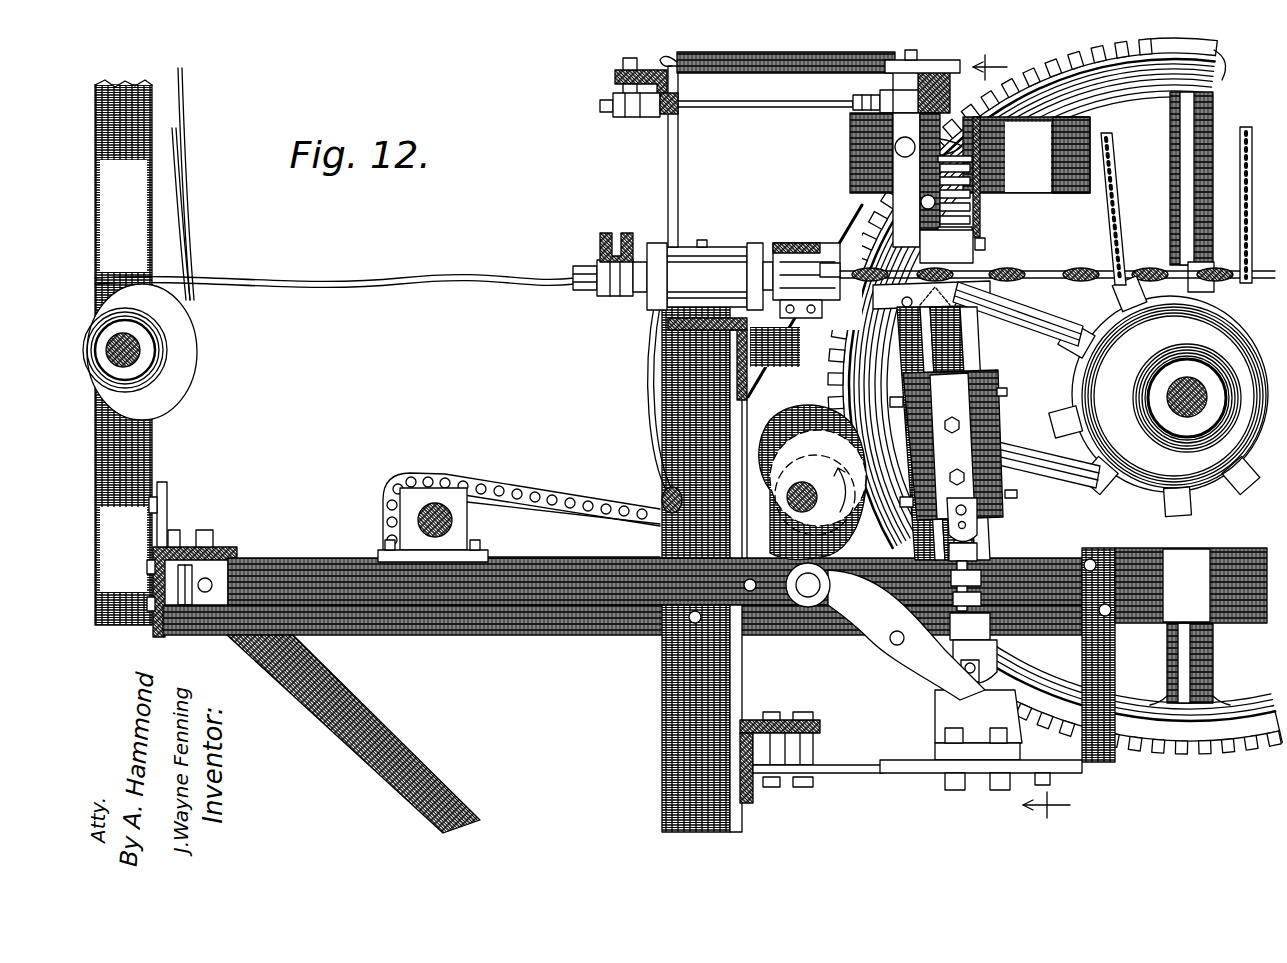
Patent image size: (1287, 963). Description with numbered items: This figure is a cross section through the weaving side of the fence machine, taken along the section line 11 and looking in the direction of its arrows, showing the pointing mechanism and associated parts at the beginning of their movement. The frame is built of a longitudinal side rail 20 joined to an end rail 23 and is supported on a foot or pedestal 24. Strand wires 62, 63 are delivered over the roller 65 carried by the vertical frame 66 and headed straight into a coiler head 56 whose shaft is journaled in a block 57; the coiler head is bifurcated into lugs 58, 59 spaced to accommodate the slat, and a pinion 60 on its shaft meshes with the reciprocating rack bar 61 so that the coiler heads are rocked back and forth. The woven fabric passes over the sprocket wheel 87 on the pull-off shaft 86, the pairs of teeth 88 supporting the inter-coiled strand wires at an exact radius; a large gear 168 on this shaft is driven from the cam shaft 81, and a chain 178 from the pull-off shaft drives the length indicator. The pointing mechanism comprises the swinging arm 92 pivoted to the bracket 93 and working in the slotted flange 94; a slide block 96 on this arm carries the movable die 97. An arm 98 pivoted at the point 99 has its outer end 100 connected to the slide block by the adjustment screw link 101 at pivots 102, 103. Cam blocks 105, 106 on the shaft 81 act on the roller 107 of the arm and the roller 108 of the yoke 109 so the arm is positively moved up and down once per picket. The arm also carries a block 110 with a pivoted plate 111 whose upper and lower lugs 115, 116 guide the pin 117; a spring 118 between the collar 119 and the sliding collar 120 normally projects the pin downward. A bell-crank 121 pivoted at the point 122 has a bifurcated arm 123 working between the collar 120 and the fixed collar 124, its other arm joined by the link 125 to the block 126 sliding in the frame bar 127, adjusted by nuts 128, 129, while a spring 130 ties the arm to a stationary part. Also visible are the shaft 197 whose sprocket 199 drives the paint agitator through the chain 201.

The section line 11 is at (1021, 437).
The longitudinal side rail 20 is at (238, 553).
The end rail 23 is at (576, 620).
The foot or pedestal 24 is at (664, 803).
The coiler head 56 is at (778, 250).
The block 57 is at (710, 275).
The finger or lug 58 is at (800, 246).
The finger or lug 59 is at (796, 320).
The pinion 60 is at (622, 290).
The reciprocating rack bar 61 is at (618, 238).
The strand wire 62 is at (184, 124).
The strand wire 63 is at (178, 166).
The roller 65 is at (197, 366).
The vertical frame 66 is at (123, 352).
The shaft 81 is at (788, 494).
The pull-off shaft 86 is at (1192, 412).
The sprocket wheel 87 is at (1110, 405).
The pairs of teeth 88 is at (1120, 300).
The swinging arm 92 is at (978, 552).
The bracket 93 is at (978, 725).
The flange 94 is at (1035, 155).
The slide block 96 is at (1000, 432).
The movable die 97 is at (972, 362).
The arm 98 is at (502, 600).
The pivot point 99 is at (208, 578).
The outer end of arm 100 is at (945, 680).
The adjustment screw link 101 is at (1000, 622).
The pivot point 102 is at (995, 641).
The pivot point 103 is at (980, 522).
The cam block 105 is at (846, 616).
The cam block 106 is at (746, 470).
The roller 107 is at (804, 608).
The roller 108 is at (806, 420).
The yoke 109 is at (662, 495).
The block 110 is at (981, 209).
The plate 111 is at (898, 186).
The upper lug 115 is at (953, 88).
The lower lug 116 is at (946, 246).
The pin 117 is at (986, 246).
The spring 118 is at (1048, 207).
The collar 119 is at (972, 226).
The collar or abutment 120 is at (1000, 170).
The bell-crank 121 is at (850, 128).
The pivot point 122 is at (894, 148).
The bifurcated arm 123 is at (962, 130).
The collar 124 is at (1015, 80).
The link or rod 125 is at (740, 108).
The block 126 is at (636, 118).
The frame bar 127 is at (660, 118).
The nut 128 is at (606, 113).
The nut 129 is at (681, 118).
The spring 130 is at (757, 70).
The large gear 168 is at (1226, 722).
The chain 178 is at (1116, 192).
The shaft 197 is at (454, 520).
The sprocket 199 is at (472, 530).
The chain 201 is at (500, 482).